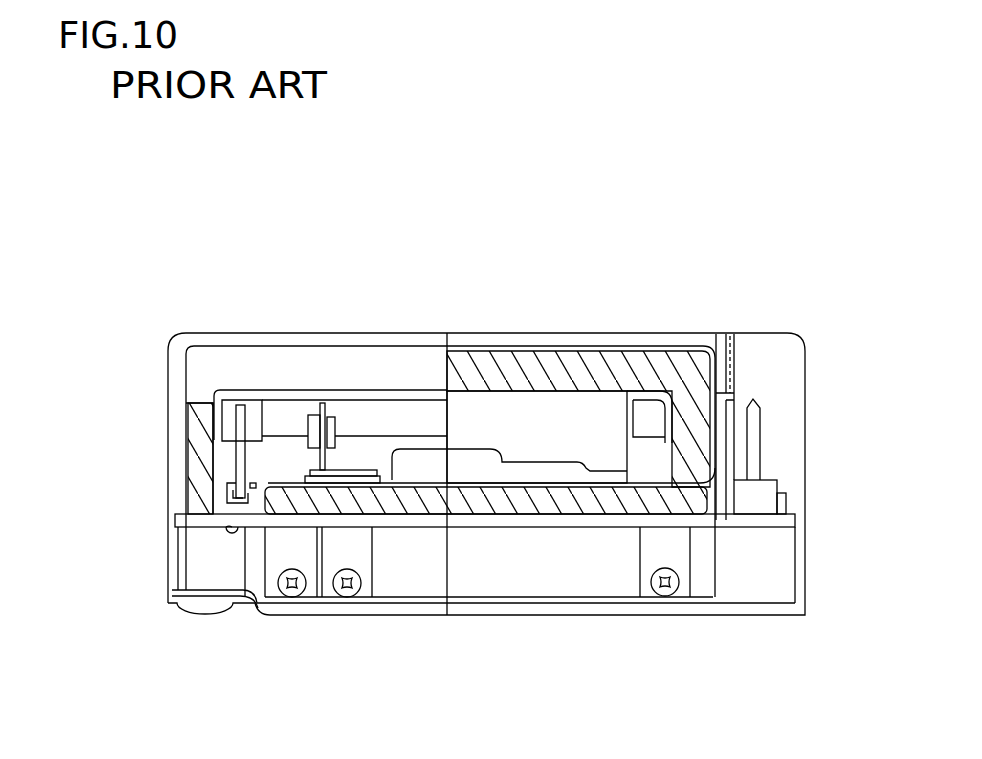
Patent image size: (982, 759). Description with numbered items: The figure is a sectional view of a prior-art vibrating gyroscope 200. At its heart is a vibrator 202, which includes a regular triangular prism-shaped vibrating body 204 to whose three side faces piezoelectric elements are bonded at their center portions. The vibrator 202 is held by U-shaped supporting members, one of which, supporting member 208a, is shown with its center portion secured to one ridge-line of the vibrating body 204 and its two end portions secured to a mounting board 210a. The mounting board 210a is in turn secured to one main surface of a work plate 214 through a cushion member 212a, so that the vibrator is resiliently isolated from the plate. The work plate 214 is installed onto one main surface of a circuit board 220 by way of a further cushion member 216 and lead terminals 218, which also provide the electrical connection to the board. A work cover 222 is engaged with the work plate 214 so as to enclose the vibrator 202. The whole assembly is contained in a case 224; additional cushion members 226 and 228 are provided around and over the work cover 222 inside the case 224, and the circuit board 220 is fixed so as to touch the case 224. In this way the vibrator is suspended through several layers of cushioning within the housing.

The vibrating gyroscope 200 is at (765, 158).
The vibrator 202 is at (423, 403).
The vibrating body 204 is at (377, 418).
The supporting member 208a is at (308, 420).
The mounting board 210a is at (365, 470).
The cushion member 212a is at (222, 432).
The work plate 214 is at (247, 477).
The cushion member 216 is at (577, 505).
The lead terminals 218 is at (220, 505).
The circuit board 220 is at (177, 542).
The work cover 222 is at (242, 390).
The case 224 is at (177, 498).
The cushion member 226 is at (200, 468).
The cushion member 228 is at (197, 363).